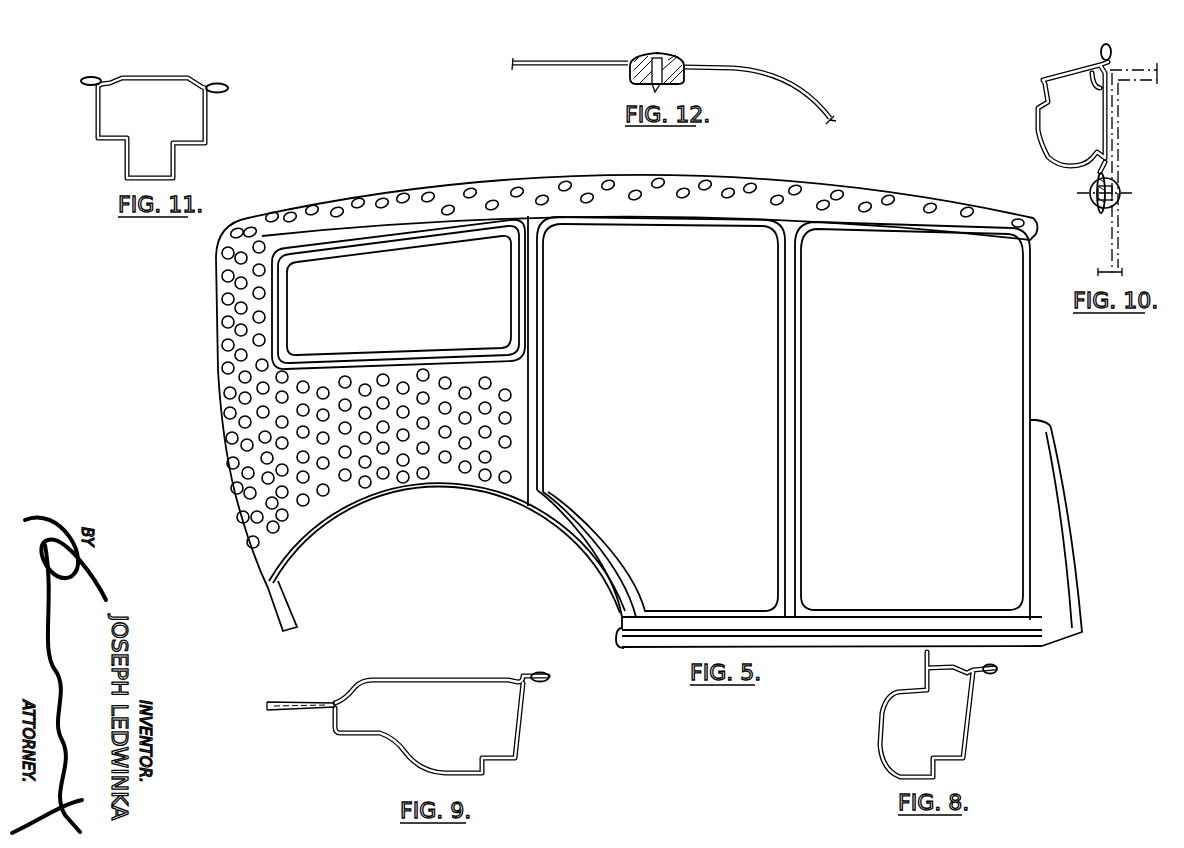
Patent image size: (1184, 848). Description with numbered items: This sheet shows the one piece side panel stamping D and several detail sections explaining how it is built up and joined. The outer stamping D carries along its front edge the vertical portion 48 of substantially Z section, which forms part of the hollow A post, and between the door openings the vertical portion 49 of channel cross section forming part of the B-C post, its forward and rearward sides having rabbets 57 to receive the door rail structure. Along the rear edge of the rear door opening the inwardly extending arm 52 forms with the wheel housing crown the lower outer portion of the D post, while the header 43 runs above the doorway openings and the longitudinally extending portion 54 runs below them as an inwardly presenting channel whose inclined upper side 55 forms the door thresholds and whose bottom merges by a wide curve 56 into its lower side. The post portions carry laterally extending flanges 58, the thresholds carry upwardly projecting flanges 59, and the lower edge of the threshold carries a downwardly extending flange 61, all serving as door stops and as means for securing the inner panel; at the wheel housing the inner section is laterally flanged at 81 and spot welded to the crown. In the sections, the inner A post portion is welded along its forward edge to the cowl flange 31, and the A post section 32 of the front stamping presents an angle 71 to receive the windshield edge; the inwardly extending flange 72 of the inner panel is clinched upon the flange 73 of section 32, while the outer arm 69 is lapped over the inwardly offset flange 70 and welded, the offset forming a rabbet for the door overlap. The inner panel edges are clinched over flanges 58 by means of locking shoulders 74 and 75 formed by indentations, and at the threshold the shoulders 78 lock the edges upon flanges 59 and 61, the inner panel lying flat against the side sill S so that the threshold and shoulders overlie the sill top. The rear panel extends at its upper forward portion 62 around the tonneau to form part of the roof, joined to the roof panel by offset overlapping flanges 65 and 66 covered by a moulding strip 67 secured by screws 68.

In FIG. 5, the header 43 is at (700, 184).
In FIG. 5, the vertical portion 48 is at (1027, 427).
In FIG. 9, the vertical portion 48 is at (523, 738).
In FIG. 8, the vertical portion 48 is at (970, 718).
In FIG. 11, the vertical portion 49 is at (158, 77).
In FIG. 5, the vertical portion 49 is at (790, 432).
In FIG. 5, the inwardly extending arm 52 is at (530, 440).
In FIG. 10, the longitudinally extending portion 54 is at (1042, 137).
In FIG. 5, the longitudinally extending portion 54 is at (740, 628).
In FIG. 10, the upper side of channel 55 is at (1065, 72).
In FIG. 10, the wide curve 56 is at (1063, 165).
In FIG. 11, the rabbets 57 is at (120, 141).
In FIG. 11, the laterally extending flanges 58 is at (88, 86).
In FIG. 9, the laterally extending flanges 58 is at (537, 683).
In FIG. 8, the laterally extending flanges 58 is at (980, 678).
In FIG. 10, the upwardly projecting flanges 59 is at (1105, 45).
In FIG. 10, the downwardly extending flange 61 is at (1099, 213).
In FIG. 12, the upper forward portion of rear panel 62 is at (730, 70).
In FIG. 12, the offset overlapping flange 65 is at (653, 80).
In FIG. 12, the offset overlapping flange 66 is at (678, 78).
In FIG. 12, the moulding strip 67 is at (680, 62).
In FIG. 12, the screws 68 is at (657, 57).
In FIG. 9, the outer forwardly extending arm 69 is at (500, 769).
In FIG. 8, the outer forwardly extending arm 69 is at (946, 766).
In FIG. 9, the inwardly offset flange 70 is at (502, 758).
In FIG. 8, the inwardly offset flange 70 is at (930, 757).
In FIG. 8, the forwardly and inwardly presenting angle 71 is at (850, 707).
In FIG. 8, the inwardly extending flange 72 is at (931, 662).
In FIG. 8, the inwardly extending flange 73 is at (924, 672).
In FIG. 9, the locking shoulder 74 is at (521, 677).
In FIG. 8, the locking shoulder 74 is at (997, 668).
In FIG. 11, the locking shoulders 75 is at (108, 81).
In FIG. 10, the shoulders 78 is at (1095, 68).
In FIG. 5, the lateral flange 81 is at (322, 522).
In FIG. 9, the flange of the cowl 31 is at (297, 710).
In FIG. 9, the A post section 32 is at (380, 736).
In FIG. 8, the A post section 32 is at (880, 745).
In FIG. 5, the outer side panel stamping D is at (544, 397).
In FIG. 10, the side sill S is at (1118, 242).